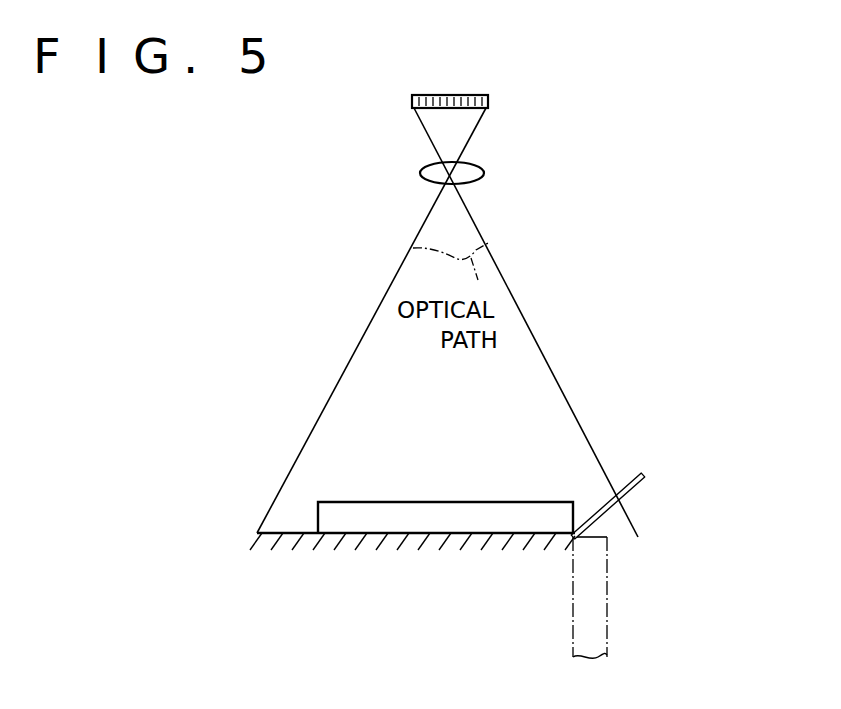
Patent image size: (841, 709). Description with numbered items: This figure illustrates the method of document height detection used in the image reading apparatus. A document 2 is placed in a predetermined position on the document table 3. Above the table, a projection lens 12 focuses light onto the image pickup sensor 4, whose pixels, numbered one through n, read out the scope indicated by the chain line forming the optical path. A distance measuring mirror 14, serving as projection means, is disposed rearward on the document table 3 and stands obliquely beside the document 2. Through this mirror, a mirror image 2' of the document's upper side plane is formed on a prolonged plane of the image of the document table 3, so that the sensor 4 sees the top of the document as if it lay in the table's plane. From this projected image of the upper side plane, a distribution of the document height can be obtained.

The image pickup sensor 4 is at (447, 95).
The projection lens 12 is at (485, 174).
The document 2 is at (445, 476).
The mirror image of the document upper side plane 2' is at (644, 597).
The document table 3 is at (365, 545).
The distance measuring mirror 14 is at (641, 474).